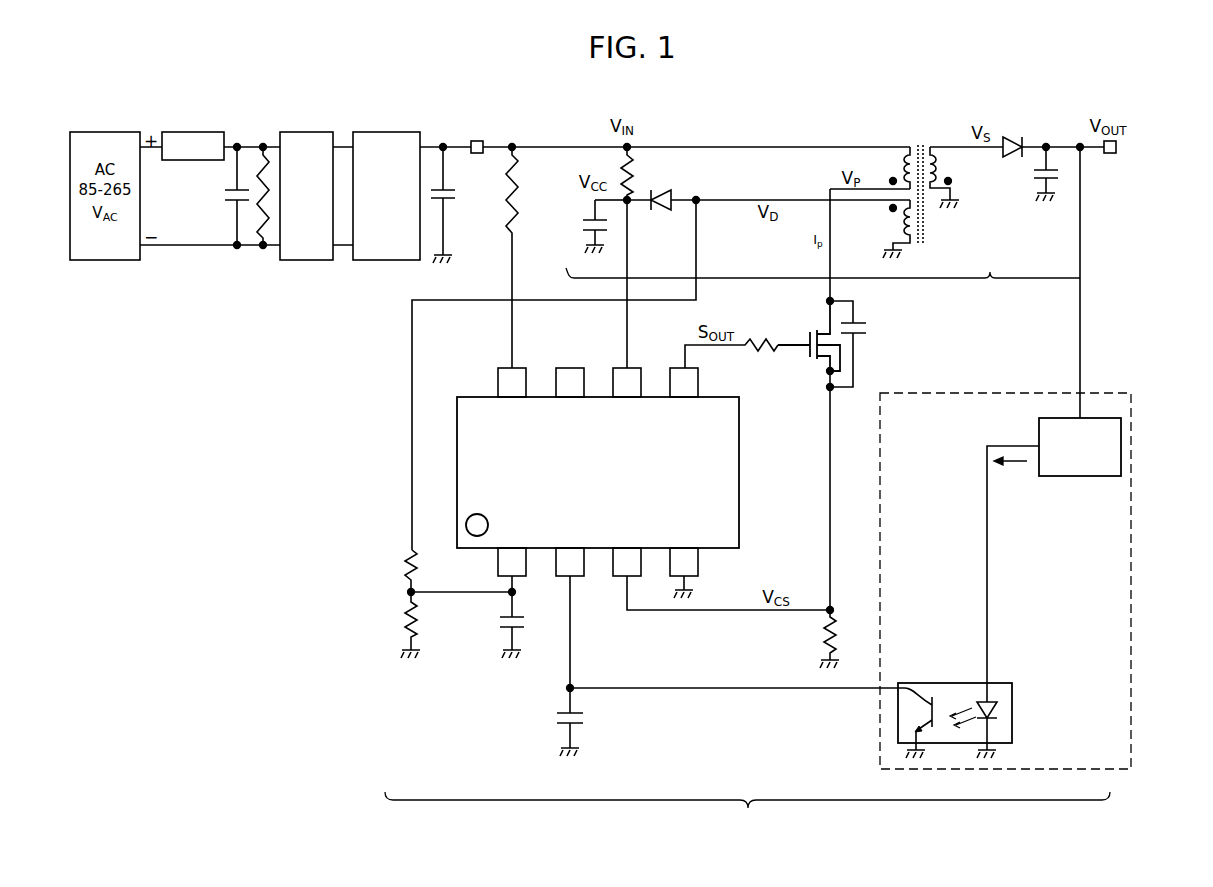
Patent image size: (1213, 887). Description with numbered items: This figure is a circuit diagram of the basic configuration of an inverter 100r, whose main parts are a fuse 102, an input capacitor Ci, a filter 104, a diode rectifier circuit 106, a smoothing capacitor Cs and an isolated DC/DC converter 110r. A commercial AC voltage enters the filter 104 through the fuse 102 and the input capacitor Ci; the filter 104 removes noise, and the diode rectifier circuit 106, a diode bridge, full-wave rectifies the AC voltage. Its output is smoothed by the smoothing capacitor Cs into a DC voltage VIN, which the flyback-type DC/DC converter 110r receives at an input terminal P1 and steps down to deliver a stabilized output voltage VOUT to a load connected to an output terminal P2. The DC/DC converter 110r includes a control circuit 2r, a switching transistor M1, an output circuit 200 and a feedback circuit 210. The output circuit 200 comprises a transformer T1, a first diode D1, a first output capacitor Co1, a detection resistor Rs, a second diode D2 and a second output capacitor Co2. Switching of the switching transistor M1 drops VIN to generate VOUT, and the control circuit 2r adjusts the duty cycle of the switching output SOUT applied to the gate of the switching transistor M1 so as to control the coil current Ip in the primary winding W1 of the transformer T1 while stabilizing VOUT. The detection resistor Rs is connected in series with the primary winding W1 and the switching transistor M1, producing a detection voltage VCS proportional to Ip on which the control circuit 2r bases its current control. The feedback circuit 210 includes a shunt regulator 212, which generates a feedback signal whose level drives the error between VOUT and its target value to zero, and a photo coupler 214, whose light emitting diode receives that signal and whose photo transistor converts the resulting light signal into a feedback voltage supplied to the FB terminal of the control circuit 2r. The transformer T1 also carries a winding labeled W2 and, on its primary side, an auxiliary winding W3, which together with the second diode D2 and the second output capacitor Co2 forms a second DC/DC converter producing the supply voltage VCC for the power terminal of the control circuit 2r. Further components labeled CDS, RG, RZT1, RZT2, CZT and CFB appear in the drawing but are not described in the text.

The fuse 102 is at (198, 132).
The filter 104 is at (309, 132).
The diode rectifier circuit 106 is at (387, 132).
The input terminal P1 is at (477, 132).
The input capacitor Ci is at (222, 196).
The smoothing capacitor Cs is at (455, 195).
The second output capacitor Co2 is at (576, 228).
The second diode D2 is at (668, 192).
The output circuit 200 is at (823, 288).
The transformer T1 is at (907, 162).
The primary winding W1 is at (906, 141).
The secondary winding W2 is at (940, 141).
The auxiliary winding W3 is at (895, 227).
The first diode D1 is at (1020, 135).
The first output capacitor Co1 is at (1033, 177).
The output terminal P2 is at (1111, 156).
The switching transistor M1 is at (810, 366).
The drain-source capacitor CDS is at (872, 333).
The gate resistor RG is at (762, 351).
The control circuit 2r is at (739, 470).
The zero-cross detection resistor RZT1 is at (400, 560).
The zero-cross detection resistor RZT2 is at (400, 612).
The zero-cross detection capacitor CZT is at (496, 621).
The feedback capacitor CFB is at (586, 721).
The detection resistor Rs is at (818, 644).
The feedback circuit 210 is at (1131, 735).
The shunt regulator 212 is at (1090, 478).
The photo coupler 214 is at (1002, 690).
The isolated DC/DC converter 110r is at (747, 813).
The inverter 100r is at (622, 853).